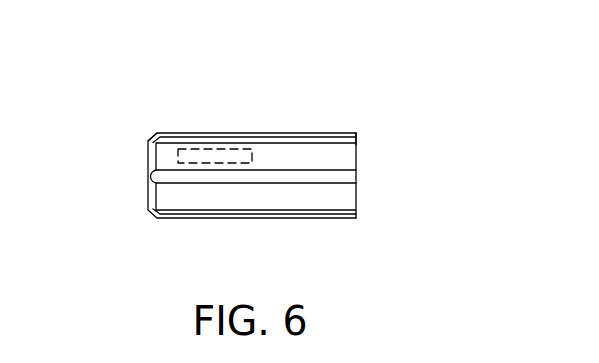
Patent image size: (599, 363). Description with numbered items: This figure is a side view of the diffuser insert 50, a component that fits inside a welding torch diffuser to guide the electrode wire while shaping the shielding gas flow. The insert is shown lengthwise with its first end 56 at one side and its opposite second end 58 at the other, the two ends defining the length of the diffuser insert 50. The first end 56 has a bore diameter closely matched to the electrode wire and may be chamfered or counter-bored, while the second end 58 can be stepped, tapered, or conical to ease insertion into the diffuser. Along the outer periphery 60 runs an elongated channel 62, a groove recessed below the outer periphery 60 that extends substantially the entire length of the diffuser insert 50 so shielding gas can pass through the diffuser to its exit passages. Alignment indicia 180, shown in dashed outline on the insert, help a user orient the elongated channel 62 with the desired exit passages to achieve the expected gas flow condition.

The diffuser insert 50 is at (270, 195).
The first end 56 is at (359, 122).
The second end 58 is at (148, 122).
The outer periphery 60 is at (338, 157).
The elongated channel 62 is at (344, 176).
The alignment indicia 180 is at (215, 149).